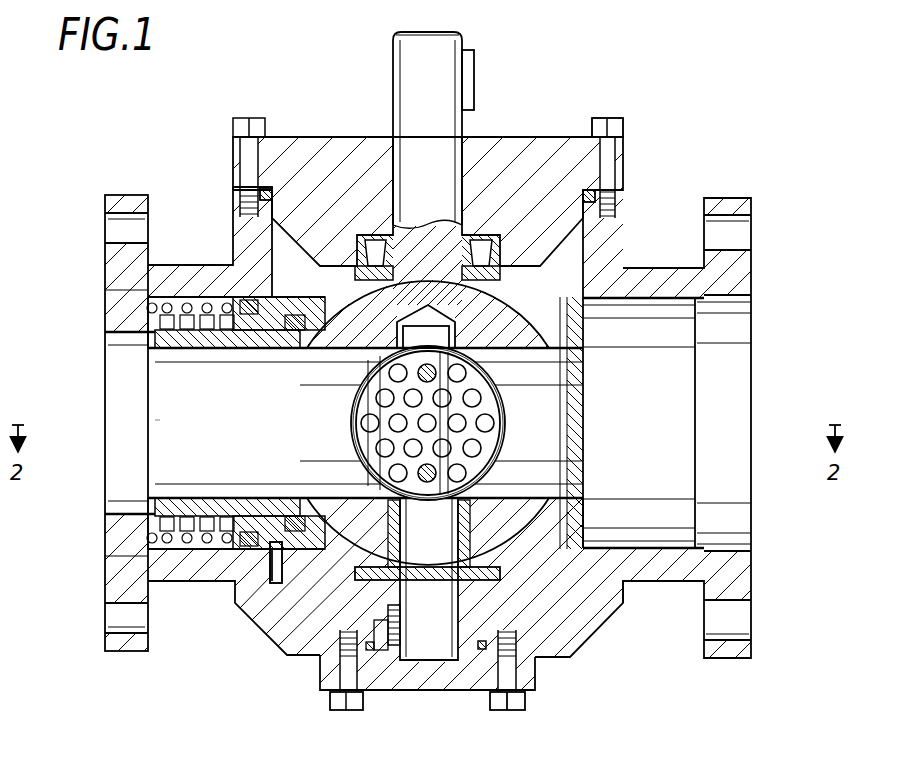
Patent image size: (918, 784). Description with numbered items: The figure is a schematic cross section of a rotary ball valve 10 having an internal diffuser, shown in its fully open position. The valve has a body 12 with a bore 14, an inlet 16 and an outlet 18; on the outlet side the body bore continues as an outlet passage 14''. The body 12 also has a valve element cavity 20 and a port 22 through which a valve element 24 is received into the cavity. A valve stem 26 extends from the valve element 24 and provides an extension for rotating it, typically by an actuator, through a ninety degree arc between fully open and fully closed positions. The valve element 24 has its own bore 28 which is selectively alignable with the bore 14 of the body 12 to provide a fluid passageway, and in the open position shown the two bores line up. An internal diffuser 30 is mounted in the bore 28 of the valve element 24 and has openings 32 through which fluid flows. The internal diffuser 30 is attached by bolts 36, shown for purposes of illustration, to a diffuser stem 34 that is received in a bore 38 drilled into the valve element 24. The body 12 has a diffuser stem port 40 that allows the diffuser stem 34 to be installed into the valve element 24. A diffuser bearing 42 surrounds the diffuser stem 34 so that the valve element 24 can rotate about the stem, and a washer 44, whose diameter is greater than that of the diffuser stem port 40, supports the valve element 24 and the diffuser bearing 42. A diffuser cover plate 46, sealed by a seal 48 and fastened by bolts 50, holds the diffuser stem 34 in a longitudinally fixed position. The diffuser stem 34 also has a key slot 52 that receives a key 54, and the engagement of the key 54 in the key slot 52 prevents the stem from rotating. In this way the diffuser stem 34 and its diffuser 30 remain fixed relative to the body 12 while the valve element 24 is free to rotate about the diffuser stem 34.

The rotary ball valve 10 is at (722, 104).
The body 12 is at (752, 276).
The bore 14 is at (198, 426).
The outlet passage 14'' is at (433, 448).
The inlet 16 is at (105, 380).
The outlet 18 is at (753, 368).
The valve element cavity 20 is at (563, 550).
The port 22 is at (283, 232).
The valve element 24 is at (560, 512).
The valve stem 26 is at (393, 62).
The bore 28 is at (336, 423).
The internal diffuser 30 is at (503, 452).
The openings 32 is at (489, 423).
The diffuser stem 34 is at (443, 548).
The bolts 36 is at (405, 465).
The bore 38 is at (430, 318).
The diffuser stem port 40 is at (468, 660).
The diffuser bearing 42 is at (463, 527).
The washer 44 is at (360, 570).
The diffuser cover plate 46 is at (535, 668).
The seal 48 is at (357, 692).
The bolts 50 is at (525, 703).
The key slot 52 is at (397, 657).
The key 54 is at (353, 623).